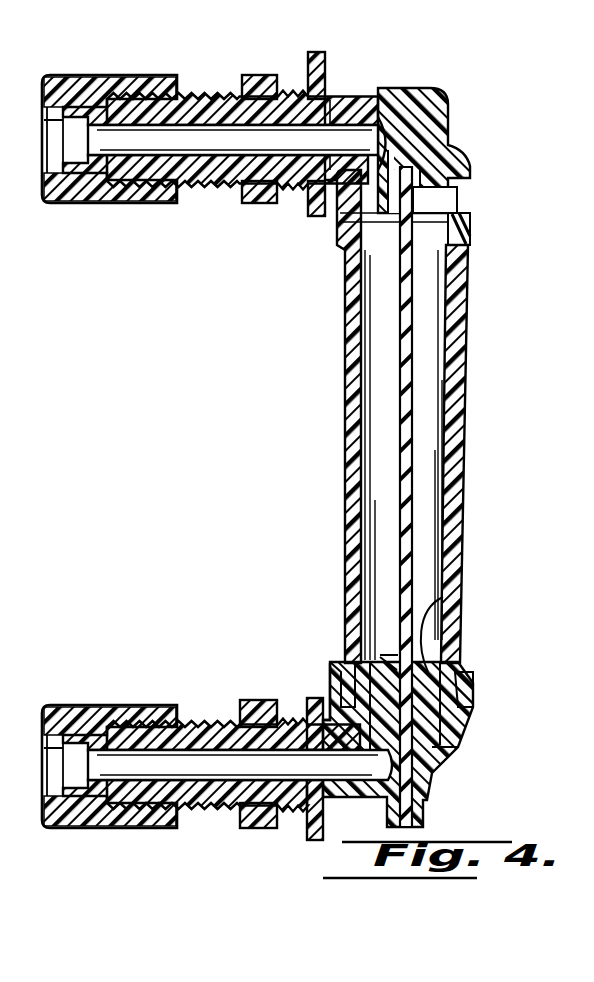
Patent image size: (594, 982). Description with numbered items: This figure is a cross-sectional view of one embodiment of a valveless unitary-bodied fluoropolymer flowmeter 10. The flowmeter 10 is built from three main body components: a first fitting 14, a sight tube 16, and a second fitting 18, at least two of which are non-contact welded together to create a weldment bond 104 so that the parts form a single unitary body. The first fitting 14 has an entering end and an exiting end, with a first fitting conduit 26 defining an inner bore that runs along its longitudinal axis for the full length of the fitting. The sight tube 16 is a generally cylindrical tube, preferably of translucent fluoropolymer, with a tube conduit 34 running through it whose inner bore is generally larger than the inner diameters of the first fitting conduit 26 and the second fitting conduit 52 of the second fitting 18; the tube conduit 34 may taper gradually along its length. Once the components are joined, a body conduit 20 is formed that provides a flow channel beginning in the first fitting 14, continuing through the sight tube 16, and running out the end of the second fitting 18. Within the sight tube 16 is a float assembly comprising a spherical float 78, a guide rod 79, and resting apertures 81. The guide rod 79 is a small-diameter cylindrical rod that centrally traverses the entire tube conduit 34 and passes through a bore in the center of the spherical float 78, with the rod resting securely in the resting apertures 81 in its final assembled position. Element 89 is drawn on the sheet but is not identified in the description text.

The flowmeter 10 is at (313, 454).
The first fitting 14 is at (207, 722).
The sight tube 16 is at (463, 422).
The second fitting 18 is at (218, 93).
The body conduit 20 is at (385, 557).
The first fitting conduit 26 is at (232, 770).
The tube conduit 34 is at (440, 290).
The second fitting conduit 52 is at (333, 133).
The spherical float 78 is at (443, 597).
The guide rod 79 is at (412, 508).
The resting apertures 81 is at (430, 803).
The upper end block 89 is at (437, 168).
The weldment bond 104 is at (462, 204).